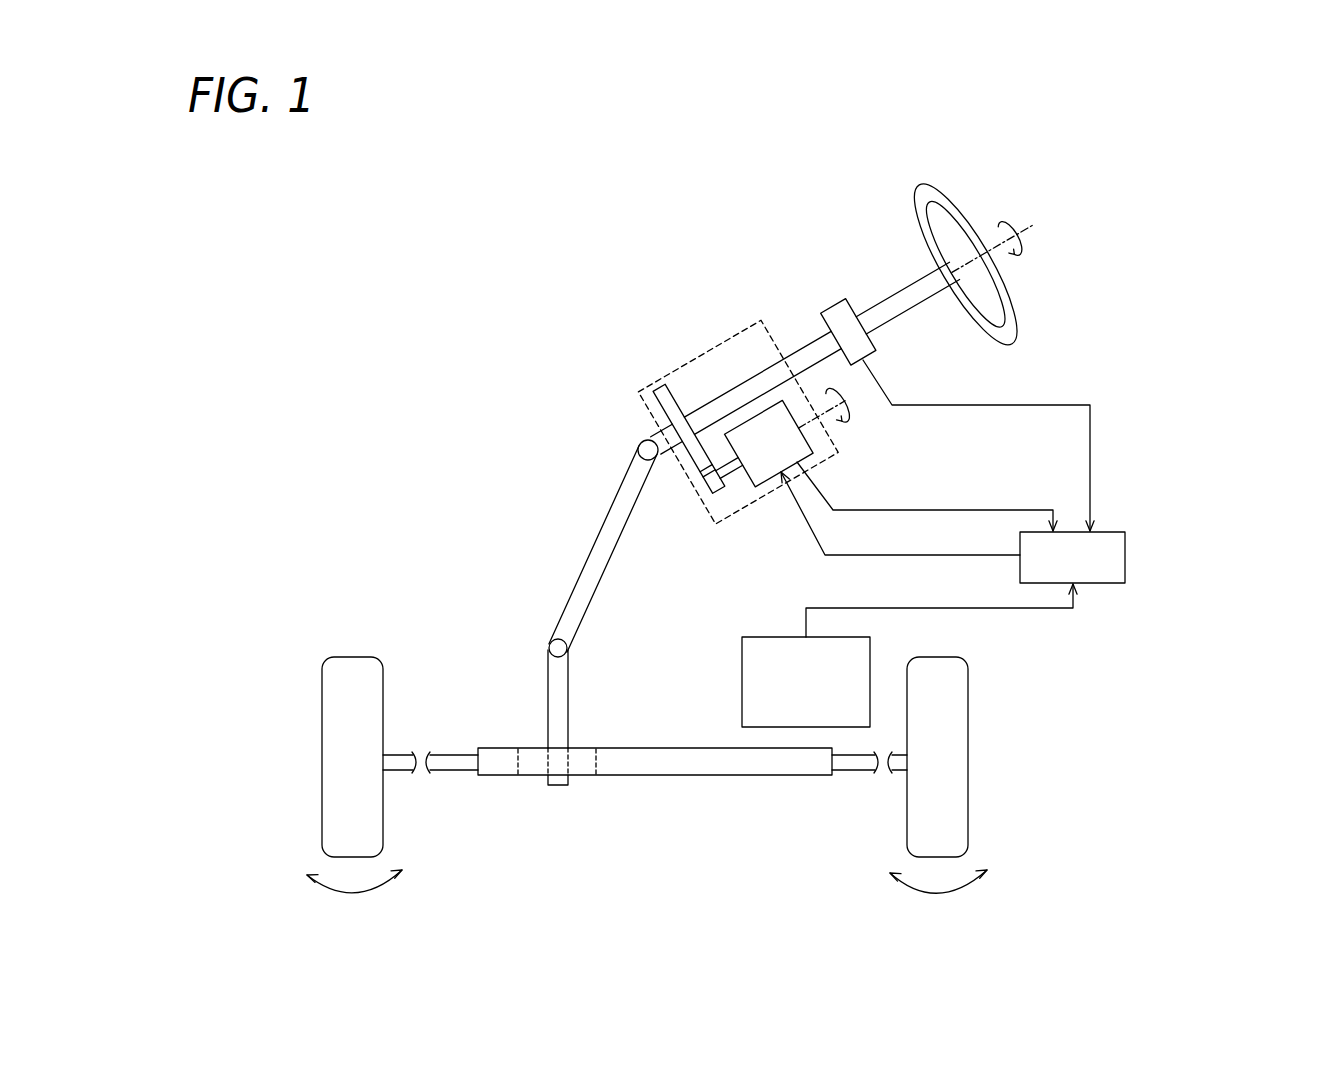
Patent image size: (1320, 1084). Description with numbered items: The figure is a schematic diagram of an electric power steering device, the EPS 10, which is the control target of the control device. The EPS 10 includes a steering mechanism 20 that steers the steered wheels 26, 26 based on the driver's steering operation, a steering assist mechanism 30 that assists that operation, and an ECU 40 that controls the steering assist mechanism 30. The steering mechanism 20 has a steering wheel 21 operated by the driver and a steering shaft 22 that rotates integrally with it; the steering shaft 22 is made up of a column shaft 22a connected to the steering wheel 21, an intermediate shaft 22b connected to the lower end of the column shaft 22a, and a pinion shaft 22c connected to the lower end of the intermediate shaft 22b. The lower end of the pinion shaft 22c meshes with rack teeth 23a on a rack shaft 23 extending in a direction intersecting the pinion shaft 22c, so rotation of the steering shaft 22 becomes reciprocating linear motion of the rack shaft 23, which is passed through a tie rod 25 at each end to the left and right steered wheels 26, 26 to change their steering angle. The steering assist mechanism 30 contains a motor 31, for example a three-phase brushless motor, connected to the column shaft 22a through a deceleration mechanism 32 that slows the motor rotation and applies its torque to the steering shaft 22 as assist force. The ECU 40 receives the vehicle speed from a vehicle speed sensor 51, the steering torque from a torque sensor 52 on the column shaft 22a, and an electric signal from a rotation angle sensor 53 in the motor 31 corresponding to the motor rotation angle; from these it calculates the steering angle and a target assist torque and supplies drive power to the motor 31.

The EPS 10 is at (745, 535).
The steering mechanism 20 is at (682, 543).
The steering wheel 21 is at (966, 255).
The steering shaft 22 is at (575, 604).
The column shaft 22a is at (611, 455).
The intermediate shaft 22b is at (590, 549).
The pinion shaft 22c is at (536, 668).
The rack shaft 23 is at (655, 735).
The rack teeth 23a is at (567, 734).
The tie rod 25 is at (645, 788).
The steered wheels 26 is at (646, 757).
The steering assist mechanism 30 is at (756, 426).
The motor 31 is at (764, 473).
The deceleration mechanism 32 is at (689, 469).
The ECU 40 is at (1103, 557).
The vehicle speed sensor 51 is at (806, 653).
The torque sensor 52 is at (844, 307).
The rotation angle sensor 53 is at (843, 439).